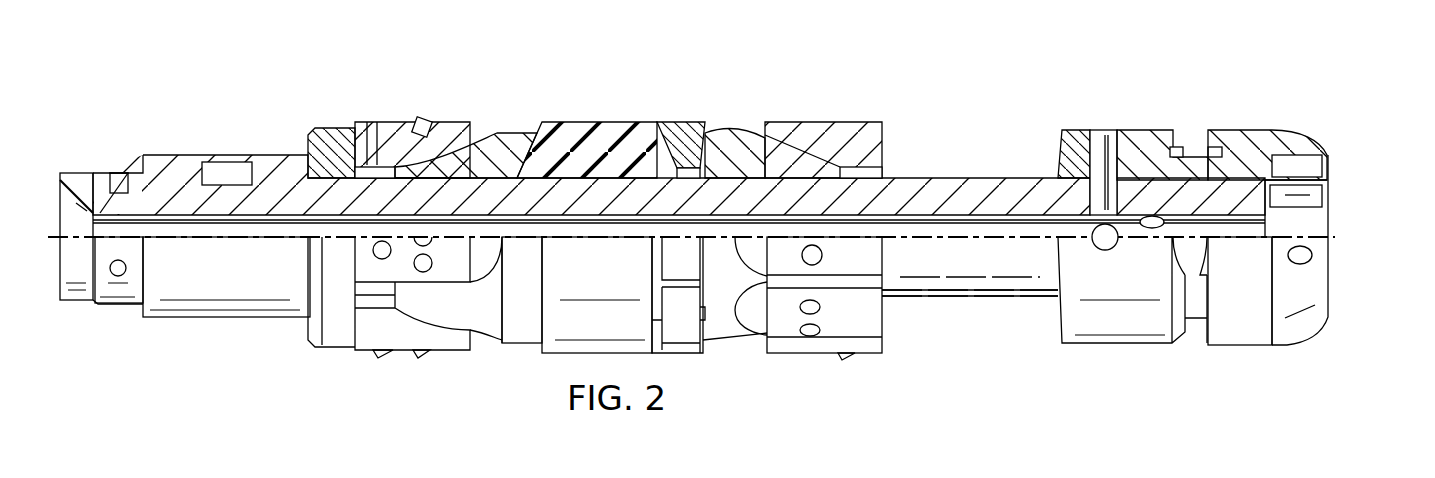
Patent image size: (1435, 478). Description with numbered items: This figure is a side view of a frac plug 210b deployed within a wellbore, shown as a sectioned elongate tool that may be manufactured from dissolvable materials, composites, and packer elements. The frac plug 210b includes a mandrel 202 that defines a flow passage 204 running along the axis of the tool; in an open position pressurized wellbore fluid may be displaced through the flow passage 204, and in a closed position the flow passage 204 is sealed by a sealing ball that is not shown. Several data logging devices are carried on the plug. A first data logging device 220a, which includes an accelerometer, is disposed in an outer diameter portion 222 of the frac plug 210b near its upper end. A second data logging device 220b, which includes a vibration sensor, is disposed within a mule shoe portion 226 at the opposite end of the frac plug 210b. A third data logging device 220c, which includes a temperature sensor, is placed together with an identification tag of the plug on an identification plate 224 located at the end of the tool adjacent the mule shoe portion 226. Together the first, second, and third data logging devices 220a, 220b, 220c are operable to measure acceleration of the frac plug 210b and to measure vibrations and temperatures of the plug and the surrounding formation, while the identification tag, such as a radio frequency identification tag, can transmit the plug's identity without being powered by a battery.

The mandrel 202 is at (152, 222).
The outer diameter portion 222 is at (163, 155).
The first data logging device 220a is at (226, 164).
The flow passage 204 is at (246, 239).
The frac plug 210b is at (588, 96).
The mule shoe portion 226 is at (1240, 130).
The second data logging device 220b is at (1300, 160).
The identification plate 224 is at (1330, 168).
The third data logging device 220c is at (1324, 197).